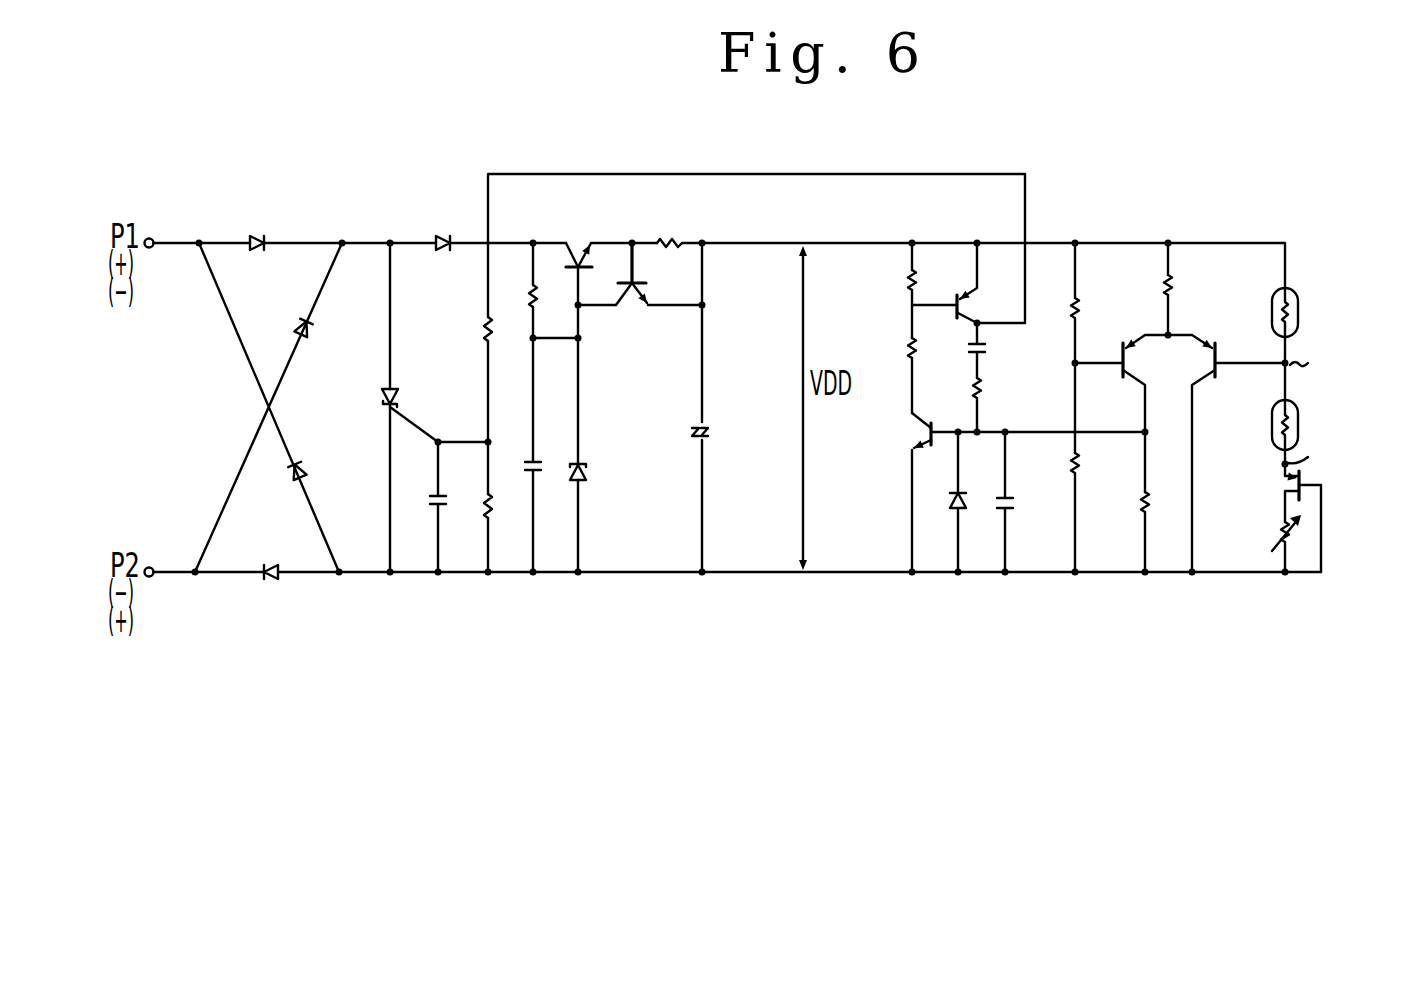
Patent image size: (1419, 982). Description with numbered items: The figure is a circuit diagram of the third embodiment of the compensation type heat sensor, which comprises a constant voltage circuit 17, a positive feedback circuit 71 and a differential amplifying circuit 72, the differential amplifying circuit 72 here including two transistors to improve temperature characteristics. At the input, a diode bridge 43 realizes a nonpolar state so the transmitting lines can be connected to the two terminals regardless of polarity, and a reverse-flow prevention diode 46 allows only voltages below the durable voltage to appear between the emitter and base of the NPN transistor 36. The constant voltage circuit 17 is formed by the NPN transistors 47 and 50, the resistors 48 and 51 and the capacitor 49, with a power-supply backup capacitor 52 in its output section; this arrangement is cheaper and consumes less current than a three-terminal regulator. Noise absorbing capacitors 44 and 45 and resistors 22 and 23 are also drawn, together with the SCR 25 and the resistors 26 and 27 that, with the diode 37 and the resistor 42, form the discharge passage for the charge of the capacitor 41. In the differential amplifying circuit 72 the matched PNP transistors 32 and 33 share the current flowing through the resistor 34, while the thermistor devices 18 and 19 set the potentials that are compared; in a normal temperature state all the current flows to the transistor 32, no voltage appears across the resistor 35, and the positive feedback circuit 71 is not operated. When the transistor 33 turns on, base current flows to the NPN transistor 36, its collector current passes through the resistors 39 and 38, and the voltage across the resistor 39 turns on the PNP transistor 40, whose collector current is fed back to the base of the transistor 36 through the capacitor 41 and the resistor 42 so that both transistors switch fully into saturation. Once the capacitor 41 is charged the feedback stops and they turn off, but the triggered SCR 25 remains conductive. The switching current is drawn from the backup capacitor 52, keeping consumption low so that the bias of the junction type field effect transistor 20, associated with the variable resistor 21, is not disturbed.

The constant voltage circuit 17 is at (675, 465).
The thermistor device 18 is at (1303, 344).
The thermistor device 19 is at (1303, 432).
The junction type field effect transistor 20 is at (1305, 472).
The variable resistor 21 is at (1297, 546).
The resistor 22 is at (1056, 348).
The resistor 23 is at (1056, 508).
The SCR 25 is at (409, 408).
The resistor 26 is at (468, 342).
The resistor 27 is at (472, 507).
The PNP transistor 32 is at (1199, 437).
The PNP transistor 33 is at (1141, 393).
The resistor 34 is at (1188, 289).
The resistor 35 is at (1128, 528).
The NPN transistor 36 is at (904, 492).
The discharge passage diode 37 is at (972, 502).
The resistor 38 is at (894, 373).
The resistor 39 is at (894, 290).
The PNP transistor 40 is at (986, 283).
The capacitor 41 is at (995, 350).
The resistor 42 is at (997, 403).
The diode bridge 43 is at (203, 610).
The noise absorbing capacitor 44 is at (1019, 502).
The noise absorbing capacitor 45 is at (425, 507).
The reverse-flow prevention diode 46 is at (442, 227).
The NPN transistor 47 is at (581, 233).
The resistor 48 is at (551, 351).
The capacitor 49 is at (544, 516).
The NPN transistor 50 is at (632, 294).
The resistor 51 is at (668, 223).
The power-supply backup capacitor 52 is at (660, 456).
The positive feedback circuit 71 is at (1016, 486).
The differential amplifying circuit 72 is at (1229, 486).